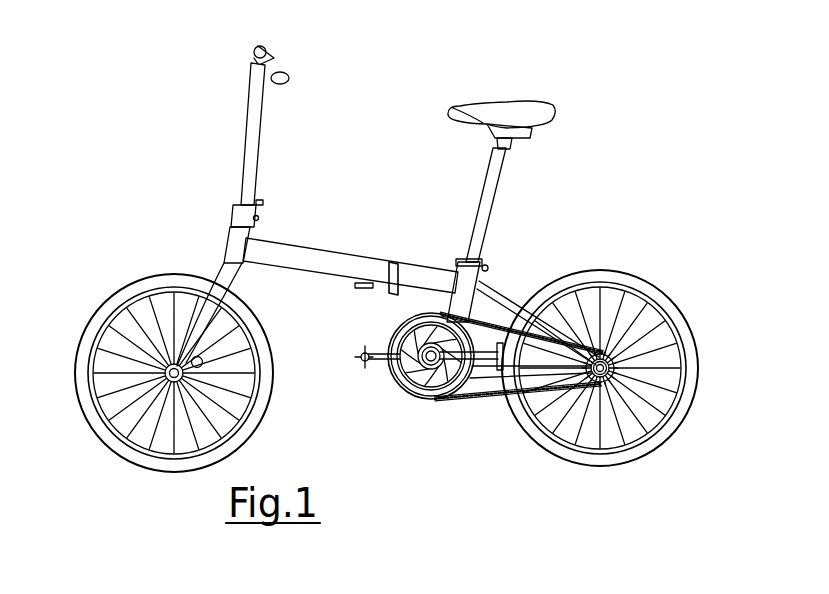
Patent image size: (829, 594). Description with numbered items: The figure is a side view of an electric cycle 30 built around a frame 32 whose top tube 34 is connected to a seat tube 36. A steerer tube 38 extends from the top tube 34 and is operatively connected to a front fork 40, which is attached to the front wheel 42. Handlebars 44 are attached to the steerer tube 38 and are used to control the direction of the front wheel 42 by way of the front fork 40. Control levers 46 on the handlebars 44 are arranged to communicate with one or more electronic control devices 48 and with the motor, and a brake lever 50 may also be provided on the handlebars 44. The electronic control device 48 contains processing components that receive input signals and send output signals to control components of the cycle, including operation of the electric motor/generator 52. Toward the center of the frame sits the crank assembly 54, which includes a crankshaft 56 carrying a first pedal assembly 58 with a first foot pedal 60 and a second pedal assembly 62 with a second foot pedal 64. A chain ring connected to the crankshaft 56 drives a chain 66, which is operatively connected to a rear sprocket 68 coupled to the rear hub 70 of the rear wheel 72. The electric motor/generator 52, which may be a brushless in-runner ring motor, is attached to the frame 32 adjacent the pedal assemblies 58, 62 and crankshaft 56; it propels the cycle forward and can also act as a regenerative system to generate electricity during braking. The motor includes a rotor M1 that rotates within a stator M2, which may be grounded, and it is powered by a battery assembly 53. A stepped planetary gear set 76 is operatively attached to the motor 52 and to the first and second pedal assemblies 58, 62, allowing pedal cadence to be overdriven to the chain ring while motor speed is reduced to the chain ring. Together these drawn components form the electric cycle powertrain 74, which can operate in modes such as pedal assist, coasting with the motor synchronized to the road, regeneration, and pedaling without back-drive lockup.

The electric cycle 30 is at (588, 119).
The frame 32 is at (277, 248).
The top tube 34 is at (352, 265).
The seat tube 36 is at (485, 200).
The steerer tube 38 is at (250, 153).
The front fork 40 is at (210, 300).
The front wheel 42 is at (110, 305).
The handlebars 44 is at (255, 58).
The control levers 46 is at (290, 77).
The electronic control device 48 is at (418, 316).
The brake lever 50 is at (250, 72).
The electric motor/generator 52 is at (393, 389).
The battery assembly 53 is at (450, 292).
The crank assembly 54 is at (440, 392).
The crankshaft 56 is at (465, 360).
The first pedal assembly 58 is at (385, 357).
The first foot pedal 60 is at (358, 362).
The second pedal assembly 62 is at (508, 370).
The second foot pedal 64 is at (512, 335).
The chain 66 is at (505, 357).
The rear sprocket 68 is at (612, 392).
The rear hub 70 is at (608, 340).
The rear wheel 72 is at (692, 378).
The electric cycle powertrain 74 is at (384, 327).
The stepped planetary gear set 76 is at (415, 394).
The rotor M1 is at (421, 364).
The stator M2 is at (432, 364).